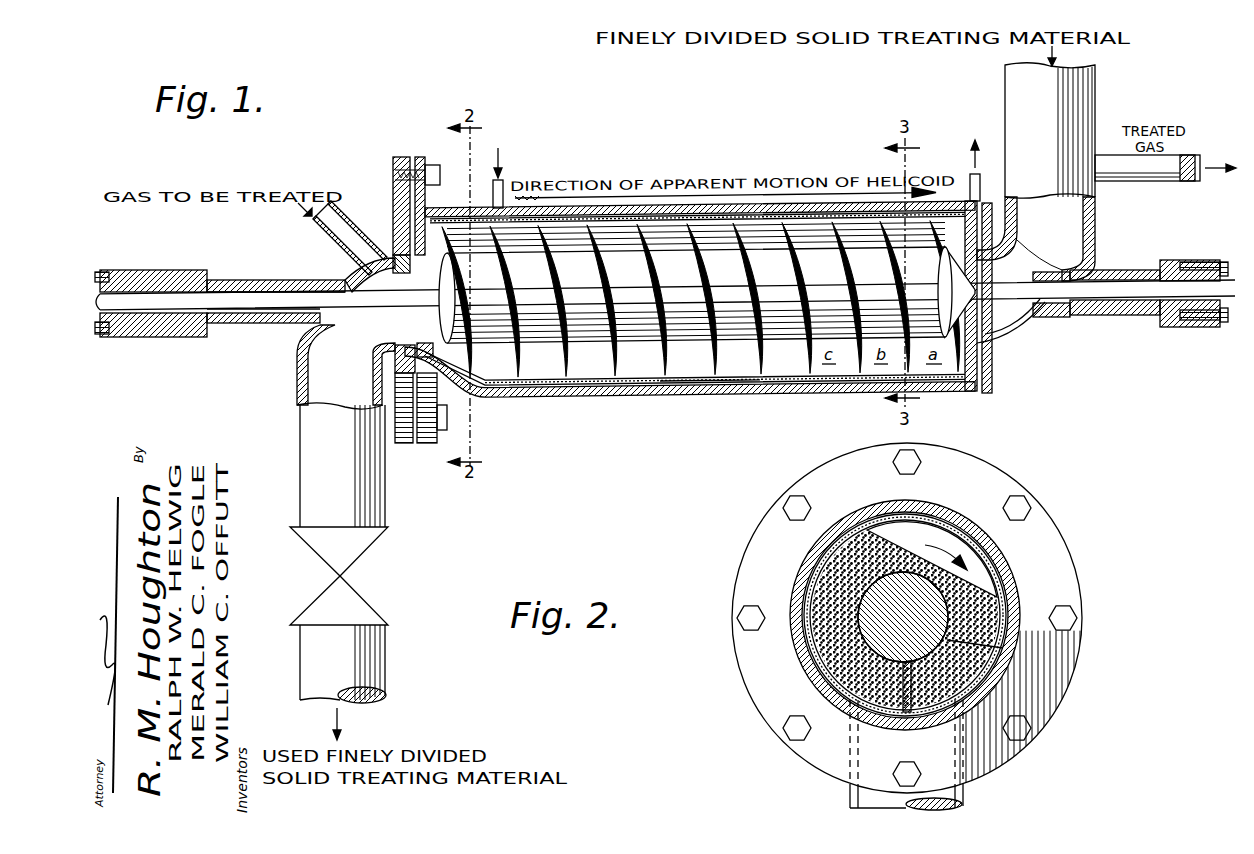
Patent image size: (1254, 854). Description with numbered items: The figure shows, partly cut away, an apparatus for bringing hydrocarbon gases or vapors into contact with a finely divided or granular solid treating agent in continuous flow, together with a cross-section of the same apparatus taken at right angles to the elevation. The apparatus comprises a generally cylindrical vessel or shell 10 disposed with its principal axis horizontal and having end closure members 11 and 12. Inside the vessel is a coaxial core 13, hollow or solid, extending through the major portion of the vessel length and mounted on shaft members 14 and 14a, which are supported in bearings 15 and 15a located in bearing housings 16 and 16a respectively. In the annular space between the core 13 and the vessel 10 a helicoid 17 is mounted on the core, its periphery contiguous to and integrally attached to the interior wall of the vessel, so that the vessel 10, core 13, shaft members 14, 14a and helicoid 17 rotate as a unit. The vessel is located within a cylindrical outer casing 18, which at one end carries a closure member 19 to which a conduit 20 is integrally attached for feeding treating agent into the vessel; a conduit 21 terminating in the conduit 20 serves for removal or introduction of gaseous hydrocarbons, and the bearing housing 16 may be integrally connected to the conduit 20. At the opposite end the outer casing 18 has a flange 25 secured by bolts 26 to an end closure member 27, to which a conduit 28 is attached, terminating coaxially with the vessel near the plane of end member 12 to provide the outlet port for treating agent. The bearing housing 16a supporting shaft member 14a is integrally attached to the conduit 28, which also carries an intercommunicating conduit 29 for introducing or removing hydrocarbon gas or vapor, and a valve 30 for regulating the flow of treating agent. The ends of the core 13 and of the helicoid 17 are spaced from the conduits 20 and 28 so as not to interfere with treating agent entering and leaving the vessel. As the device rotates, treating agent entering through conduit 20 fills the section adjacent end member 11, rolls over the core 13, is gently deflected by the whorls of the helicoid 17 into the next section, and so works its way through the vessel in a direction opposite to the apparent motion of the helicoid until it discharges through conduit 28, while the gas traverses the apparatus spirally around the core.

In FIG. 1, the vessel or shell 10 is at (744, 385).
In FIG. 2, the vessel or shell 10 is at (1005, 585).
In FIG. 1, the end closure member 11 is at (995, 372).
In FIG. 1, the end closure member 12 is at (415, 230).
In FIG. 1, the core 13 is at (630, 385).
In FIG. 2, the core 13 is at (1050, 660).
In FIG. 1, the shaft member 14 is at (1040, 322).
In FIG. 1, the shaft member 14a is at (246, 310).
In FIG. 1, the bearing 15 is at (1175, 328).
In FIG. 1, the bearing 15a is at (172, 337).
In FIG. 1, the bearing housing 16 is at (1184, 262).
In FIG. 1, the bearing housing 16a is at (175, 272).
In FIG. 1, the helicoid 17 is at (703, 384).
In FIG. 2, the helicoid 17 is at (930, 722).
In FIG. 1, the outer casing 18 is at (655, 383).
In FIG. 2, the outer casing 18 is at (1005, 560).
In FIG. 1, the closure member 19 is at (992, 348).
In FIG. 1, the conduit 20 is at (1095, 242).
In FIG. 1, the conduit 21 is at (1165, 176).
In FIG. 1, the flange 25 is at (493, 195).
In FIG. 2, the flange 25 is at (1062, 530).
In FIG. 1, the bolts or fastening devices 26 is at (432, 165).
In FIG. 2, the bolts or fastening devices 26 is at (1025, 500).
In FIG. 1, the end or closure member 27 is at (393, 212).
In FIG. 1, the conduit 28 is at (293, 367).
In FIG. 2, the conduit 28 is at (965, 794).
In FIG. 1, the intercommunicating conduit 29 is at (318, 248).
In FIG. 1, the valve 30 is at (345, 576).